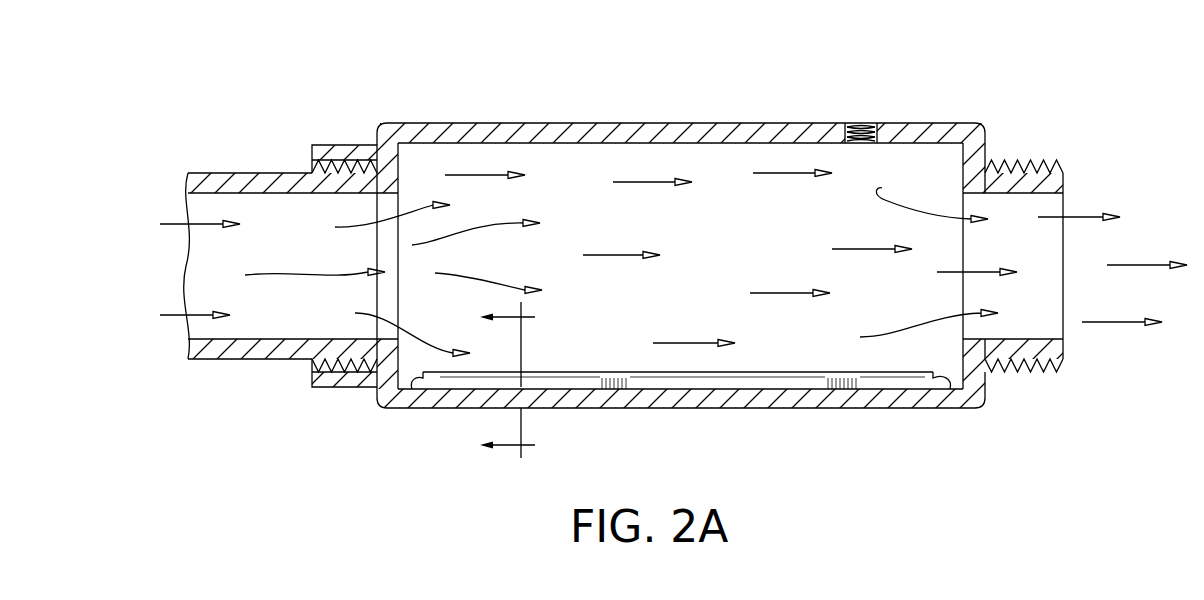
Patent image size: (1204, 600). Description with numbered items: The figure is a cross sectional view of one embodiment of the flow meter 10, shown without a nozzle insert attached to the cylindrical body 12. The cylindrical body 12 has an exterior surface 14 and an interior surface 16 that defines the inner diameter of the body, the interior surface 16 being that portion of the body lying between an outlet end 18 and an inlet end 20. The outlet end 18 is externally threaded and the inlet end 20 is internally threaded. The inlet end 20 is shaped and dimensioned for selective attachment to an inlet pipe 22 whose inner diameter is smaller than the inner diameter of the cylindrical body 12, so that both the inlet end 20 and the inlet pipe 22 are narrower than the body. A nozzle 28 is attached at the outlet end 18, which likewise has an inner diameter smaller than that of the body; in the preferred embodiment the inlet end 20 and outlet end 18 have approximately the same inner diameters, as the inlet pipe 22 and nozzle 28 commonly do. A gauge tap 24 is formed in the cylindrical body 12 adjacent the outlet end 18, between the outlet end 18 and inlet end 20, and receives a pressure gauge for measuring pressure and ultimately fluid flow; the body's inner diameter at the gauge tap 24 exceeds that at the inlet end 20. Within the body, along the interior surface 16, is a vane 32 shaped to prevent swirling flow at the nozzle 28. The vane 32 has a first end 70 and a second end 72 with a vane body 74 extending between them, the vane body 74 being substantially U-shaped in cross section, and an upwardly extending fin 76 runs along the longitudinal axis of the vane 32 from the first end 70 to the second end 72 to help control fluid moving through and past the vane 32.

The flow meter 10 is at (272, 84).
The cylindrical body 12 is at (462, 123).
The exterior surface 14 is at (730, 123).
The interior surface 16 is at (572, 143).
The outlet end 18 is at (965, 123).
The inlet end 20 is at (346, 145).
The inlet pipe 22 is at (192, 173).
The gauge tap 24 is at (865, 123).
The nozzle 28 is at (1050, 160).
The vane 32 is at (752, 380).
The first end 70 is at (947, 383).
The second end 72 is at (403, 389).
The vane body 74 is at (873, 385).
The upwardly extending fin 76 is at (790, 372).